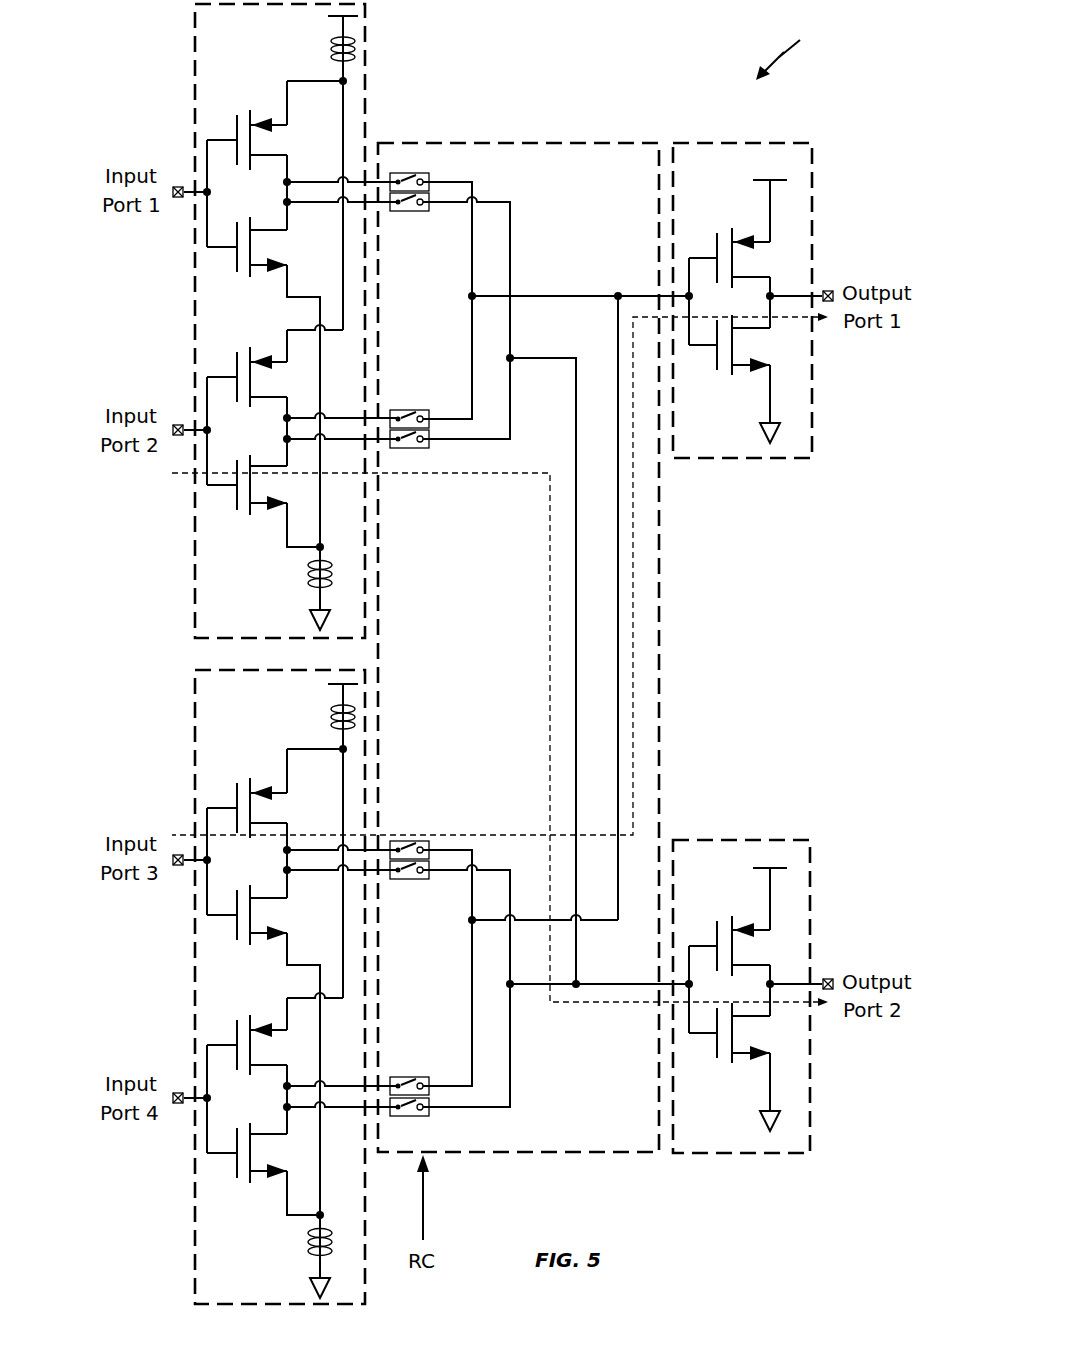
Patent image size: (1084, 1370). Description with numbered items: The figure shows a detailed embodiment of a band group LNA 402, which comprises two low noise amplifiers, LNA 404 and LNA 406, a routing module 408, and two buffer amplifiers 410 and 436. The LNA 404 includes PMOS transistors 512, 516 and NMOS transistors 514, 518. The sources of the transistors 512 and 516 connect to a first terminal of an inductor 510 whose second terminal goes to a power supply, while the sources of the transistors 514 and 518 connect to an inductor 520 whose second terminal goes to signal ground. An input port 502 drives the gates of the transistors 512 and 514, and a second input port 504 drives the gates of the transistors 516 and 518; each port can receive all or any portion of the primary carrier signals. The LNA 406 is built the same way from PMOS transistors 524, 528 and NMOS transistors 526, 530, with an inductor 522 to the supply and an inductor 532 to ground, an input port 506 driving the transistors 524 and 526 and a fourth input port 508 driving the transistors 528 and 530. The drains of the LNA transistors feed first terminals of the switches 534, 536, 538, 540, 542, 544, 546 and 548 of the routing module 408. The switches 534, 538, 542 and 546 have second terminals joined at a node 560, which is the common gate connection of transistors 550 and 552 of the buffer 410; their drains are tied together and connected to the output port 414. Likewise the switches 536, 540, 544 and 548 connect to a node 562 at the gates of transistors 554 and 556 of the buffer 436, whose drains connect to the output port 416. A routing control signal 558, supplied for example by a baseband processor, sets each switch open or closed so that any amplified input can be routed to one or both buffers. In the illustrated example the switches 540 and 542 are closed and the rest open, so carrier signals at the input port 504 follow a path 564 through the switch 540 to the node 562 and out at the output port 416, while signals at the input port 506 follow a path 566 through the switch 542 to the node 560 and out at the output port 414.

The band group LNA 402 is at (796, 49).
The LNA 404 is at (195, 50).
The LNA 406 is at (195, 714).
The routing module 408 is at (500, 143).
The buffer amplifier 410 is at (812, 162).
The buffer amplifier 436 is at (810, 868).
The output port 414 is at (829, 290).
The output port 416 is at (829, 978).
The input port 502 is at (177, 199).
The second input port 504 is at (177, 437).
The input port 506 is at (177, 866).
The fourth input port 508 is at (177, 1104).
The inductor 510 is at (332, 42).
The PMOS transistor 512 is at (252, 147).
The NMOS transistor 514 is at (252, 251).
The PMOS transistor 516 is at (252, 383).
The NMOS transistor 518 is at (252, 491).
The inductor 520 is at (307, 573).
The inductor 522 is at (325, 714).
The PMOS transistor 524 is at (253, 815).
The NMOS transistor 526 is at (253, 920).
The PMOS transistor 528 is at (252, 1052).
The NMOS transistor 530 is at (252, 1159).
The inductor 532 is at (307, 1245).
The switch 534 is at (402, 173).
The switch 536 is at (402, 211).
The switch 538 is at (402, 410).
The switch 540 is at (415, 448).
The switch 542 is at (401, 841).
The switch 544 is at (400, 879).
The switch 546 is at (401, 1077).
The switch 548 is at (415, 1116).
The transistor 550 is at (734, 259).
The transistor 552 is at (734, 347).
The transistor 554 is at (734, 947).
The transistor 556 is at (734, 1035).
The routing control signal 558 is at (424, 1195).
The node 560 is at (691, 299).
The node 562 is at (691, 986).
The path 564 is at (478, 476).
The path 566 is at (480, 835).